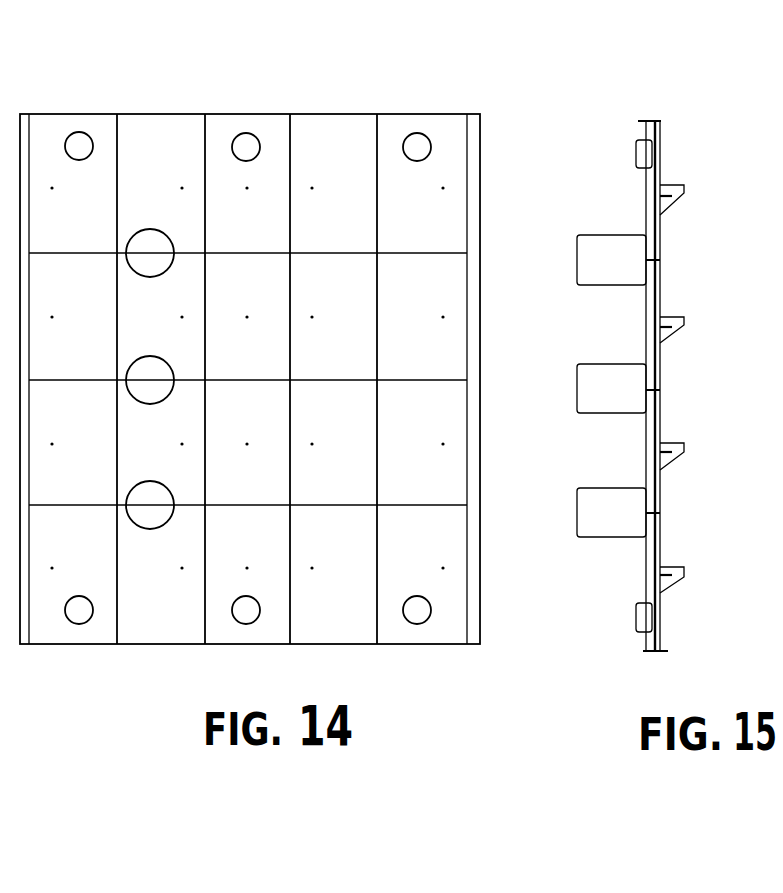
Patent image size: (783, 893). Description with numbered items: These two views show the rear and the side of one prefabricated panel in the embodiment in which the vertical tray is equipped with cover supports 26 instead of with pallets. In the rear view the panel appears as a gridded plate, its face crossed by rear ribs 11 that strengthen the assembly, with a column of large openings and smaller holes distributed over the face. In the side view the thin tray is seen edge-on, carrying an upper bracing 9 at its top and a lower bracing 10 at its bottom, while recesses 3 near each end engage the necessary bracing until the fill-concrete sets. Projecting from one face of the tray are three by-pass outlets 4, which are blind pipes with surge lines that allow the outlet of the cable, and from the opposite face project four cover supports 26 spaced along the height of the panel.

In FIG. 14, the rear ribs 11 is at (188, 253).
In FIG. 15, the upper bracing 9 is at (640, 120).
In FIG. 15, the recesses 3 is at (640, 155).
In FIG. 15, the lower bracing 10 is at (645, 655).
In FIG. 15, the by-pass outlets 4 is at (595, 250).
In FIG. 15, the cover support 26 is at (683, 185).